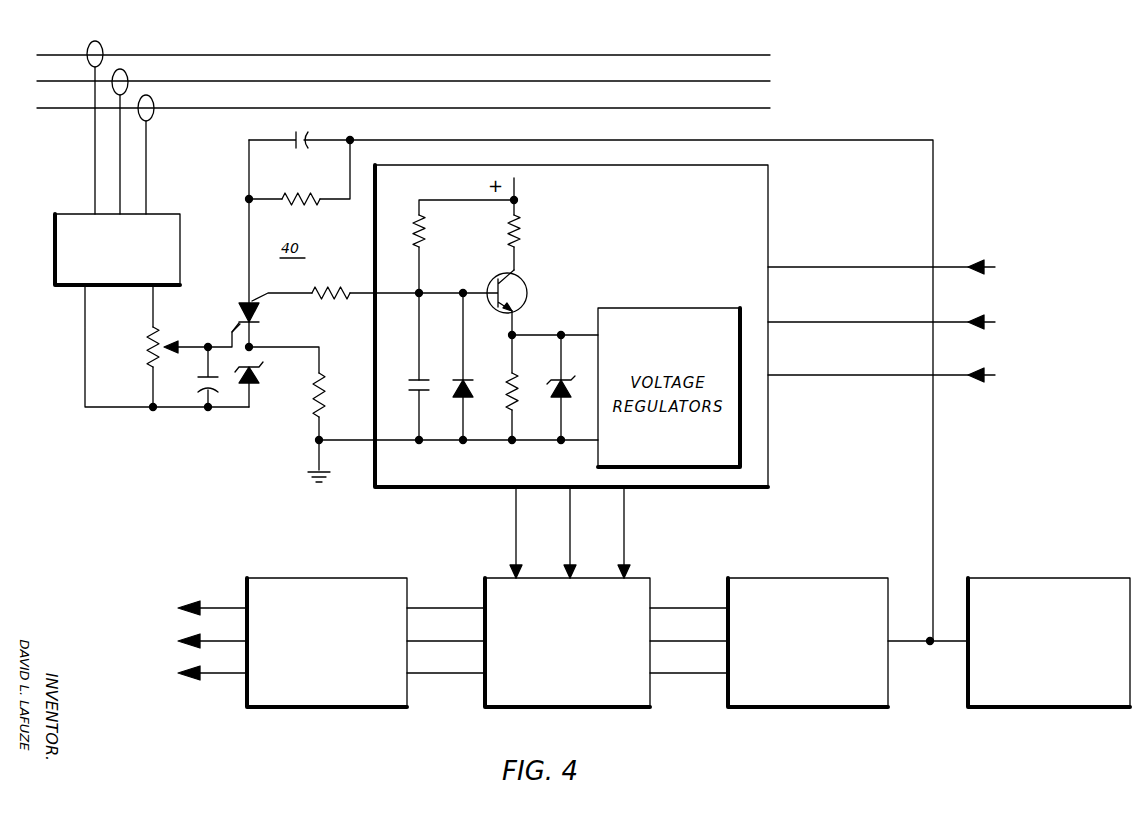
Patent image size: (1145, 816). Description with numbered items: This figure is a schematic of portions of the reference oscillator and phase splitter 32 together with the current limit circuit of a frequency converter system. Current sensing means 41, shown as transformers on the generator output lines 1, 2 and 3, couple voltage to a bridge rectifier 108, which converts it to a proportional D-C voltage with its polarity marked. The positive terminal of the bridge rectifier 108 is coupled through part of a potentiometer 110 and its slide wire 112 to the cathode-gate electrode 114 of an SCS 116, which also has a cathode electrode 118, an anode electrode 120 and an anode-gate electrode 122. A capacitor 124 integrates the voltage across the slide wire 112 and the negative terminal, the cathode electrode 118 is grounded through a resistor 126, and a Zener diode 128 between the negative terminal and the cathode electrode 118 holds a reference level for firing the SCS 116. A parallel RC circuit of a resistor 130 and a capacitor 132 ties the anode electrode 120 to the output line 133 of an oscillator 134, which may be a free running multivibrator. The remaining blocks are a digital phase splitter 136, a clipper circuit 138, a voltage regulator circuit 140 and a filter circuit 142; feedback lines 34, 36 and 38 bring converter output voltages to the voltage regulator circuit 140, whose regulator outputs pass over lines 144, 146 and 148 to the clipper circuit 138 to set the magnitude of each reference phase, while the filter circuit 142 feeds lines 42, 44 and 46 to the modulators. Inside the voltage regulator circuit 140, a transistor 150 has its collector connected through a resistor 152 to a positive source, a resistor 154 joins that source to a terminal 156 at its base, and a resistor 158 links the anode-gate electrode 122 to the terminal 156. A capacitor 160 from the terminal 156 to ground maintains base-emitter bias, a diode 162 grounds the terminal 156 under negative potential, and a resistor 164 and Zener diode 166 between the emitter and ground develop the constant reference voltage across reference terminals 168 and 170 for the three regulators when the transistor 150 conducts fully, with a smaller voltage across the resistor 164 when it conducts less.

The generator output line 1 is at (395, 108).
The generator output line 2 is at (394, 81).
The generator output line 3 is at (394, 55).
The current sensing means 41 is at (102, 42).
The bridge rectifier 108 is at (60, 214).
The potentiometer 110 is at (147, 353).
The slide wire 112 is at (177, 343).
The cathode-gate electrode 114 is at (233, 327).
The SCS 116 is at (245, 300).
The cathode electrode 118 is at (252, 334).
The anode electrode 120 is at (248, 263).
The anode-gate electrode 122 is at (283, 294).
The capacitor 124 is at (201, 383).
The resistor 126 is at (312, 408).
The Zener diode 128 is at (257, 384).
The resistor 130 is at (313, 203).
The capacitor 132 is at (292, 150).
The output line 133 is at (930, 647).
The oscillator 134 is at (1042, 708).
The digital phase splitter 136 is at (817, 708).
The clipper circuit 138 is at (639, 708).
The voltage regulator circuit 140 is at (769, 207).
The filter circuit 142 is at (345, 708).
The line 144 is at (517, 533).
The line 146 is at (571, 533).
The line 148 is at (625, 529).
The transistor 150 is at (527, 286).
The resistor 152 is at (522, 229).
The resistor 154 is at (428, 233).
The terminal 156 is at (424, 291).
The resistor 158 is at (325, 300).
The capacitor 160 is at (425, 380).
The diode 162 is at (468, 400).
The resistor 164 is at (518, 378).
The Zener diode 166 is at (566, 400).
The reference terminal 168 is at (562, 332).
The reference terminal 170 is at (556, 444).
The reference oscillator and phase splitter 32 is at (718, 544).
The feedback line 34 is at (827, 266).
The feedback line 36 is at (825, 321).
The feedback line 38 is at (826, 374).
The line 42 is at (218, 606).
The line 44 is at (224, 640).
The line 46 is at (222, 676).